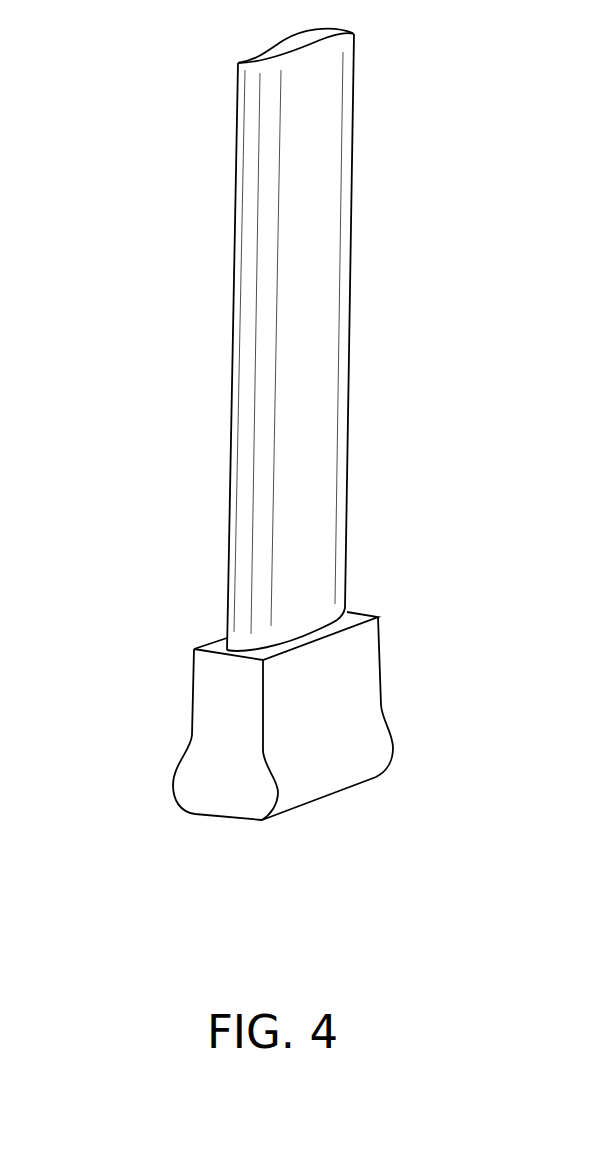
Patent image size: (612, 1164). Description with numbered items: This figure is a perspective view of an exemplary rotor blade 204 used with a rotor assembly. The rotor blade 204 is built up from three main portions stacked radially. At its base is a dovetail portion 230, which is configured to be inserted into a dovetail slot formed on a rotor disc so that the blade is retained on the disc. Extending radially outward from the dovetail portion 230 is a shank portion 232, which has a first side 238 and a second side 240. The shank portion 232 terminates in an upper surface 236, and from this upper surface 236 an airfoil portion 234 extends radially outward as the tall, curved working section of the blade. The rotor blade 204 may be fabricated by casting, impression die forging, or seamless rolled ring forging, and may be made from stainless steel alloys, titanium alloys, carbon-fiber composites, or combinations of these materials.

The rotor blade 204 is at (282, 436).
The airfoil portion 234 is at (330, 128).
The upper surface 236 is at (343, 617).
The first side 238 is at (225, 637).
The dovetail portion 230 is at (282, 727).
The shank portion 232 is at (217, 681).
The second side 240 is at (367, 680).